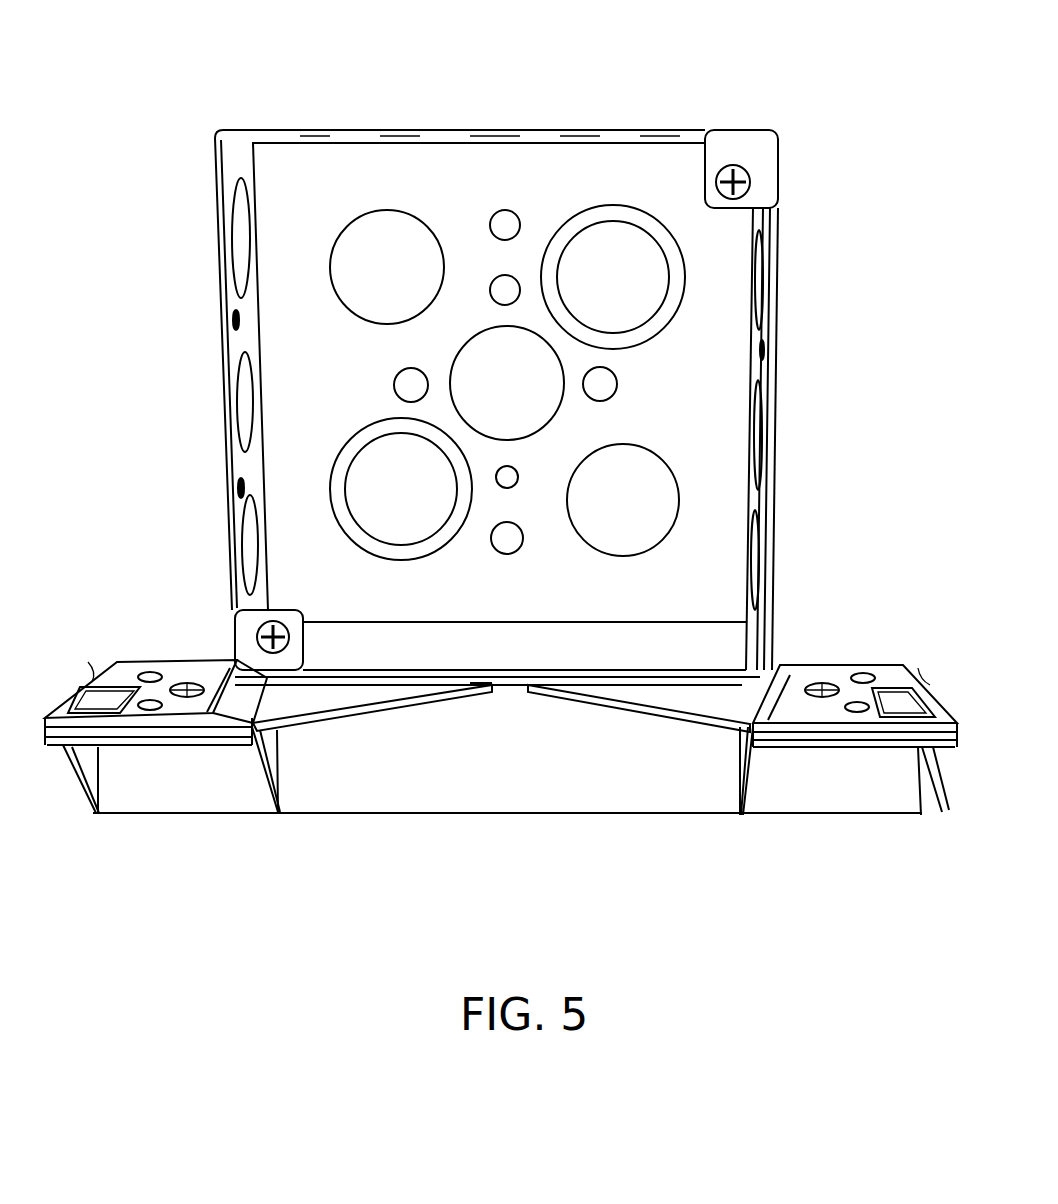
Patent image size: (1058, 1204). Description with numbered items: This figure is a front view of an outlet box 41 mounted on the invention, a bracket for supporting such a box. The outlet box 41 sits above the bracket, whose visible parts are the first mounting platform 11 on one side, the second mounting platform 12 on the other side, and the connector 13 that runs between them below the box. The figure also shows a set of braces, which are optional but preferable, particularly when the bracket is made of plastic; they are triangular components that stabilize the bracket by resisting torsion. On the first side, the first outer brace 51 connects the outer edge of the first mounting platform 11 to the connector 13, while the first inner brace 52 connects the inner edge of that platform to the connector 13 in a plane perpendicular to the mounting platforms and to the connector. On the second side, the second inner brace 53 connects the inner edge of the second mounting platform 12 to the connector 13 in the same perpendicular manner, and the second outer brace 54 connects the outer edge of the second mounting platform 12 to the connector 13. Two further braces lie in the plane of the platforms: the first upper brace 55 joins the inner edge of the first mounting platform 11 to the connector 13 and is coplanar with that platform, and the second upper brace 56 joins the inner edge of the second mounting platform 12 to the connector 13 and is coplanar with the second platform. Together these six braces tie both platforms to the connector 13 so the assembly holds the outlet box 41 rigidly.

The outlet box 41 is at (658, 100).
The first mounting platform 11 is at (90, 677).
The second mounting platform 12 is at (920, 680).
The connector 13 is at (492, 768).
The first outer brace 51 is at (72, 777).
The first inner brace 52 is at (253, 780).
The second inner brace 53 is at (753, 770).
The second outer brace 54 is at (940, 777).
The first upper brace 55 is at (362, 715).
The second upper brace 56 is at (652, 713).